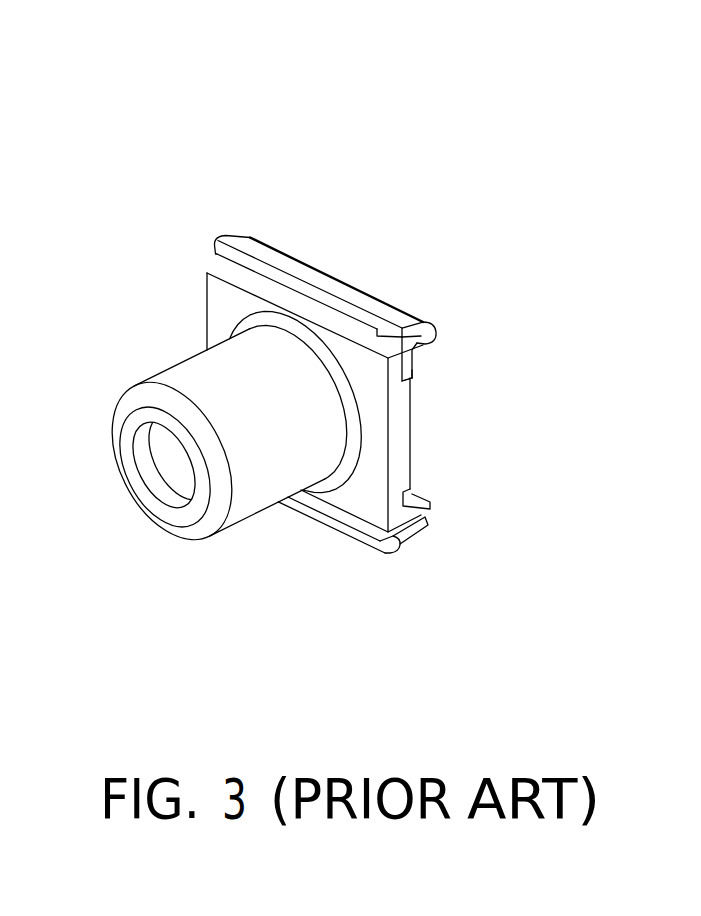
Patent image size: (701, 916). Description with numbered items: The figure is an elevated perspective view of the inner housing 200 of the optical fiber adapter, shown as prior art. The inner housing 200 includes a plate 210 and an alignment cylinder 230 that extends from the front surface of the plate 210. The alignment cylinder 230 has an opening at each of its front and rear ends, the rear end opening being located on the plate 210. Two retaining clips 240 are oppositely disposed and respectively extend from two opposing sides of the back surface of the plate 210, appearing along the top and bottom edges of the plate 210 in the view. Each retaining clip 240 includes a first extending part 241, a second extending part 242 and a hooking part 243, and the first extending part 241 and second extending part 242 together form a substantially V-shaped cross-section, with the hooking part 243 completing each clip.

The inner housing 200 is at (200, 118).
The plate 210 is at (402, 437).
The alignment cylinder 230 is at (187, 385).
The retaining clip 240 is at (355, 272).
The first extending part 241 is at (413, 355).
The second extending part 242 is at (410, 330).
The hooking part 243 is at (292, 288).